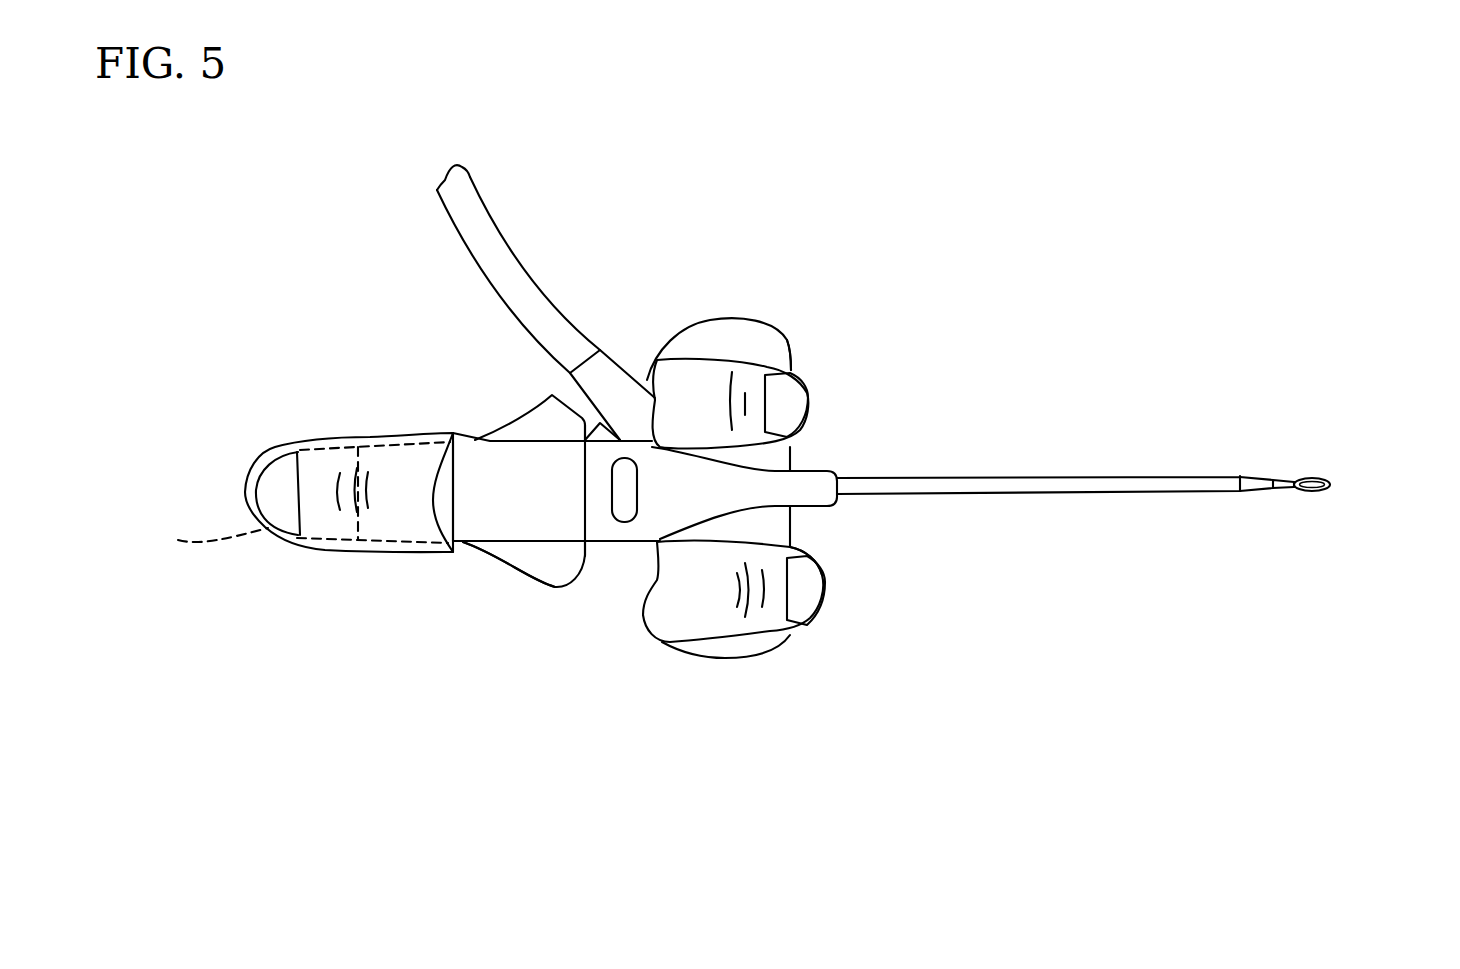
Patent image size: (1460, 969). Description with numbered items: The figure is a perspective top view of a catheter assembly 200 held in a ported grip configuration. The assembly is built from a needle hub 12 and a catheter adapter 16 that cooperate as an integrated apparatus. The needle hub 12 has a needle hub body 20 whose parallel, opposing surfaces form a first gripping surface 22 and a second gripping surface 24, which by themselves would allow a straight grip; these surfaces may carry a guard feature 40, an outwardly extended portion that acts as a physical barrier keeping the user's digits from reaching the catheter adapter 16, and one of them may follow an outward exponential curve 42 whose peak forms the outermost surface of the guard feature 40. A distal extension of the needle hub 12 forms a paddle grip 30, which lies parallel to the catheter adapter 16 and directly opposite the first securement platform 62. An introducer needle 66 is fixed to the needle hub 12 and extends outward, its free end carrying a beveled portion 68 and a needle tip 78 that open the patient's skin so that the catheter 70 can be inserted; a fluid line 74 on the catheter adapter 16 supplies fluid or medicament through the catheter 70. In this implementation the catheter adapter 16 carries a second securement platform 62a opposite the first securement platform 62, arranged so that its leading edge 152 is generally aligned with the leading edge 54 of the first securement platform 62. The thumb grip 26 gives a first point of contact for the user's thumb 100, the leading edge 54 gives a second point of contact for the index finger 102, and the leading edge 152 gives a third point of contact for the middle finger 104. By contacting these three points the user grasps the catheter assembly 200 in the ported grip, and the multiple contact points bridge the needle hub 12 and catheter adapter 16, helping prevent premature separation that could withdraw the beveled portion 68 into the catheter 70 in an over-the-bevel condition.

The needle hub 12 is at (527, 572).
The catheter adapter 16 is at (832, 470).
The needle hub body 20 is at (450, 440).
The first gripping surface 22 is at (478, 497).
The second gripping surface 24 is at (463, 545).
The thumb grip 26 is at (206, 538).
The paddle grip 30 is at (777, 528).
The guard feature 40 is at (557, 408).
The exponential curve 42 is at (512, 425).
The leading edge of first securement platform 54 is at (790, 352).
The first securement platform 62 is at (748, 337).
The second securement platform 62a is at (733, 660).
The introducer needle 66 is at (1283, 478).
The beveled portion 68 is at (1323, 481).
The catheter 70 is at (1150, 477).
The fluid line 74 is at (483, 230).
The needle tip 78 is at (1292, 491).
The thumb 100 is at (268, 475).
The index finger 102 is at (787, 407).
The middle finger 104 is at (810, 600).
The leading edge of second securement platform 152 is at (795, 638).
The catheter assembly 200 is at (1216, 685).